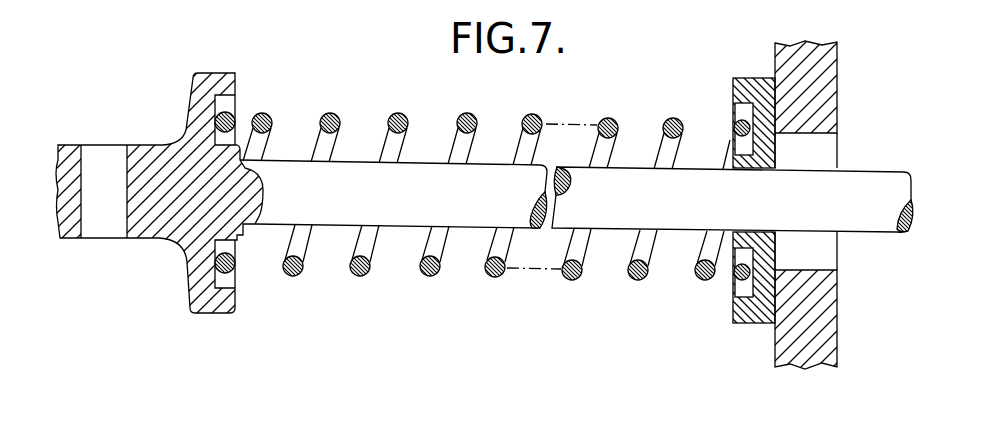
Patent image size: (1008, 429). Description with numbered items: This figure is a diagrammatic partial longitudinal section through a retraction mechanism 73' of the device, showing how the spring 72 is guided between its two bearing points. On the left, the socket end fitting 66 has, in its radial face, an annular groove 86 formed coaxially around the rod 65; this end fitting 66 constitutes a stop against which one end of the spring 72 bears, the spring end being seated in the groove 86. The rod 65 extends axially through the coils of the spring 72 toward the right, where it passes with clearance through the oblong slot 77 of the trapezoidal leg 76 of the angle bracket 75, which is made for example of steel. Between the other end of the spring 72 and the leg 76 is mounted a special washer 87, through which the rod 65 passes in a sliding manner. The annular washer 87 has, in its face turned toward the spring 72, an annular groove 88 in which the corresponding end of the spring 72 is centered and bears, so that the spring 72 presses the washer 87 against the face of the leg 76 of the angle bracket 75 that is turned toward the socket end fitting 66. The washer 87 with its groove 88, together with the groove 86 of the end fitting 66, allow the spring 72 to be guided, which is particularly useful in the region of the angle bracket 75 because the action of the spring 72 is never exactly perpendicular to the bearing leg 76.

The socket end fitting 66 is at (203, 298).
The annular groove 86 is at (215, 278).
The rod 65 is at (402, 195).
The spring 72 is at (358, 268).
The spring assembly 73' is at (494, 335).
The annular groove 88 is at (743, 112).
The special washer 87 is at (760, 305).
The oblong slot 77 is at (817, 150).
The trapezoidal leg 76 is at (813, 315).
The angle bracket 75 is at (840, 355).